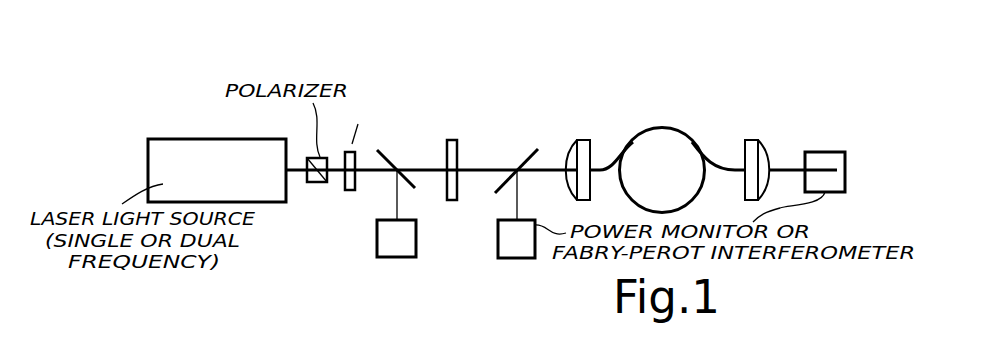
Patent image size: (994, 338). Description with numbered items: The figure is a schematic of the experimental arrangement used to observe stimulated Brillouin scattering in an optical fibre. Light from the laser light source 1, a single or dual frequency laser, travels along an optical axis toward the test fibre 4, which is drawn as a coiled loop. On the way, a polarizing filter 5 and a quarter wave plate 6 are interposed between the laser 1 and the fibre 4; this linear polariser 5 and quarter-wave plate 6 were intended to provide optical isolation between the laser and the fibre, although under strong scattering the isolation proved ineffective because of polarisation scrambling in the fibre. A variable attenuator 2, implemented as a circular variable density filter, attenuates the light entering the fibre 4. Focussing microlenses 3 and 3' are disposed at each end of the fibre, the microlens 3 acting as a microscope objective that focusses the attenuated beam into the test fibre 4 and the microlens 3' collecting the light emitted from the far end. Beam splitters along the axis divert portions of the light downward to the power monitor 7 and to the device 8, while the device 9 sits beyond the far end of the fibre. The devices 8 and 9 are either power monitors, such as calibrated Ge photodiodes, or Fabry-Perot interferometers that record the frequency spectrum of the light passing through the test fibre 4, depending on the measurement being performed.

The laser light source 1 is at (193, 155).
The variable attenuator 2 is at (453, 147).
The focussing microlens 3 is at (588, 129).
The focussing microlens 3' is at (758, 129).
The test fibre 4 is at (672, 126).
The polarizing filter 5 is at (313, 183).
The quarter wave plate 6 is at (348, 191).
The power monitor 7 is at (395, 247).
The power monitor or Fabry-Perot interferometer 8 is at (517, 258).
The power monitor or Fabry-Perot interferometer 9 is at (822, 155).